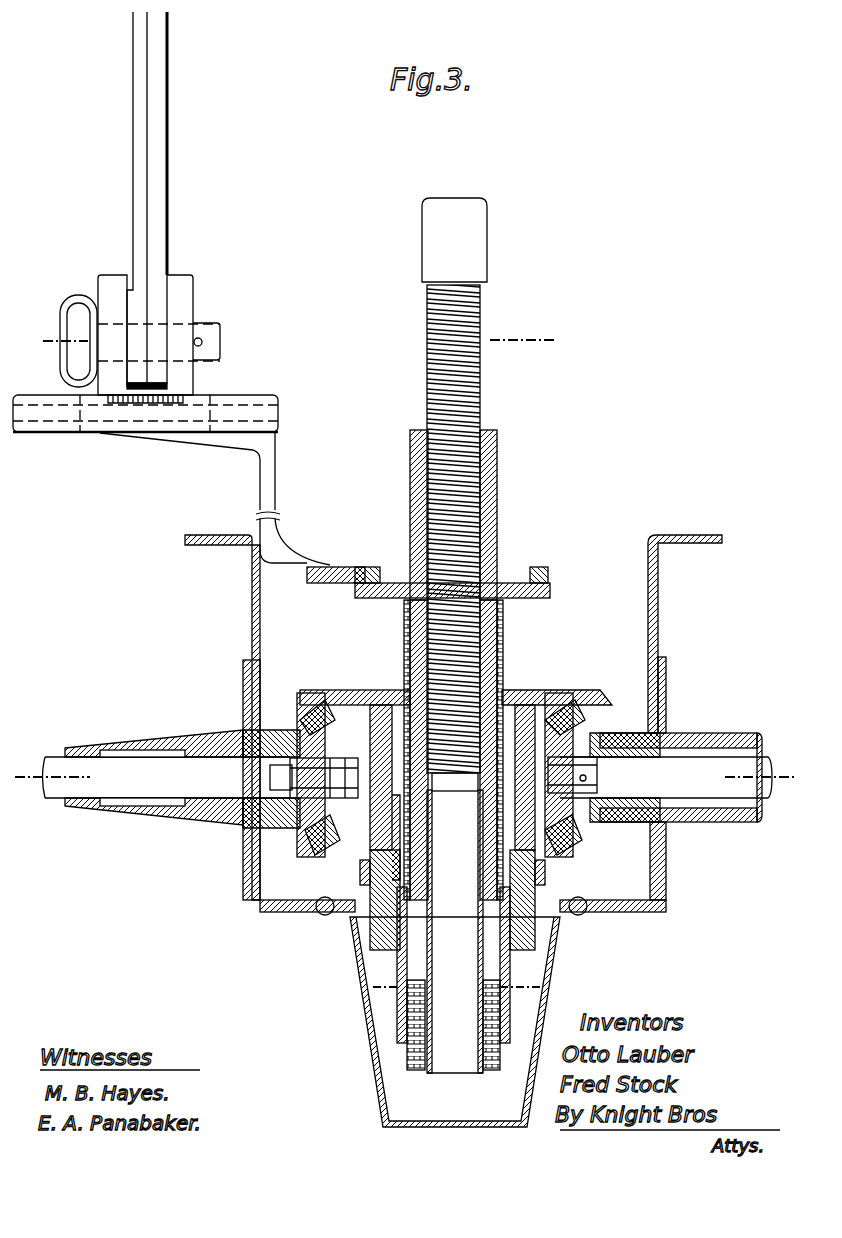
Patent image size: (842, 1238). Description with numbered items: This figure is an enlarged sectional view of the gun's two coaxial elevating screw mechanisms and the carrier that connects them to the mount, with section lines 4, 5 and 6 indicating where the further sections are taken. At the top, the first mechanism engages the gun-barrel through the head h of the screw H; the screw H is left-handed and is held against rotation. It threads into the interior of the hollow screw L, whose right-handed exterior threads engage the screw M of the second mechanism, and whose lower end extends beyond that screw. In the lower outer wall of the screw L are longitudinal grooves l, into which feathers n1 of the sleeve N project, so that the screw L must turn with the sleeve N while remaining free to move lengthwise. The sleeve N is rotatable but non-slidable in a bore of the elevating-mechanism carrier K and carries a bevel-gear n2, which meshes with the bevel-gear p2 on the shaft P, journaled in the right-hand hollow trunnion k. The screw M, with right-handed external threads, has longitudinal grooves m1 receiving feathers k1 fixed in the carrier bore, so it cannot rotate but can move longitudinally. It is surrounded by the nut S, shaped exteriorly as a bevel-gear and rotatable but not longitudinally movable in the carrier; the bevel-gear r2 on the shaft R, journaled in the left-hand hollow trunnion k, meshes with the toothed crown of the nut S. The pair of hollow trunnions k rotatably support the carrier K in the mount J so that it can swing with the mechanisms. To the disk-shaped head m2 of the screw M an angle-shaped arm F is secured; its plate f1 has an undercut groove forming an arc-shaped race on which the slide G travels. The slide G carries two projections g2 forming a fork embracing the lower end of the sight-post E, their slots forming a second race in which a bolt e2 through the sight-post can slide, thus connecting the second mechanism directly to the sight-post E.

The sight-post E is at (168, 135).
The projections g2 is at (103, 278).
The bolt e2 is at (220, 340).
The slide G is at (190, 392).
The plate f1 is at (52, 405).
The arm F is at (286, 470).
The head h is at (480, 245).
The screw H is at (465, 392).
The screw L is at (497, 492).
The mount J is at (250, 580).
The head m2 is at (550, 590).
The screw M is at (500, 632).
The grooves m1 is at (404, 662).
The nut S is at (345, 690).
The hollow trunnions k is at (300, 700).
The shaft P is at (705, 787).
The shaft R is at (135, 785).
The bevel-gear r2 is at (290, 765).
The bevel-gear p2 is at (597, 790).
The feathers k1 is at (455, 796).
The grooves l is at (483, 908).
The elevating-mechanism carrier K is at (535, 875).
The bevel-gear n2 is at (370, 868).
The sleeve N is at (400, 992).
The feathers n1 is at (410, 1045).
The section line 4 4 is at (294, 343).
The section line 5 5 is at (406, 761).
The section line 6 6 is at (456, 975).